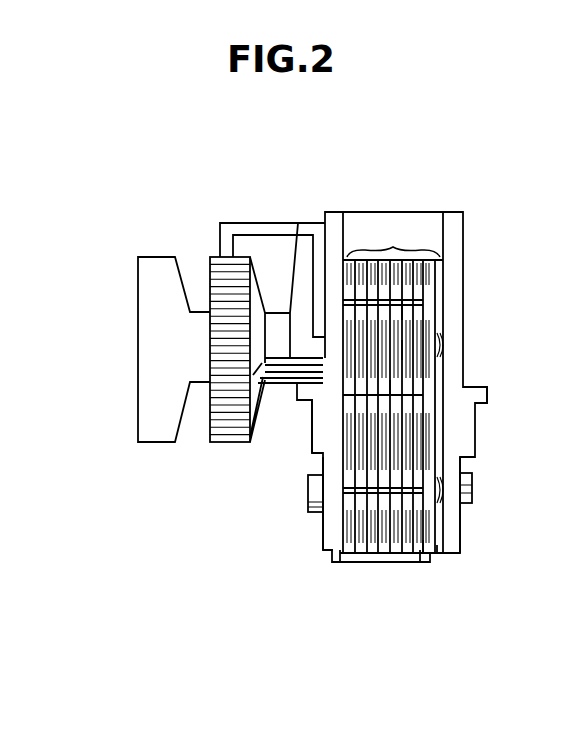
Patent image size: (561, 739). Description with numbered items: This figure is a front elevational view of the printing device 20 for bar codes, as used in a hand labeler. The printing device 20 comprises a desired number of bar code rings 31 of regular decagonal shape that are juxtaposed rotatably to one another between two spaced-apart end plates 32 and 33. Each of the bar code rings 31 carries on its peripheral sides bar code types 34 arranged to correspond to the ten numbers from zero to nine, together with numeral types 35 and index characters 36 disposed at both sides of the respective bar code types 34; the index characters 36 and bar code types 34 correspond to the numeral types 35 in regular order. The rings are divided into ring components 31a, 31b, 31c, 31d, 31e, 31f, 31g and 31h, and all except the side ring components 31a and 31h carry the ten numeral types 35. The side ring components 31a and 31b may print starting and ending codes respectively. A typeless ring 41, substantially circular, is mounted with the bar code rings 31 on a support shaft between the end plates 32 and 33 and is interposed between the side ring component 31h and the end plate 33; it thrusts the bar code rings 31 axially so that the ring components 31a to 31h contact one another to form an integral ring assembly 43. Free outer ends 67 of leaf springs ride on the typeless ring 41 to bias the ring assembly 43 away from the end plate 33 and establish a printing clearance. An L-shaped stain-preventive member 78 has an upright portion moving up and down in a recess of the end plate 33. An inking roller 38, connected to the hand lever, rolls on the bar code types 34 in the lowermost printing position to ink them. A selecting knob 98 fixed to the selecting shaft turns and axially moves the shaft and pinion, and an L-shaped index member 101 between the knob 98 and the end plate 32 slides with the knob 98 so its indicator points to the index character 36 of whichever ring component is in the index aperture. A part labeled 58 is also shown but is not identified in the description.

The printing device 20 is at (442, 198).
The selecting knob 98 is at (236, 442).
The L-shaped index member 101 is at (303, 231).
The top plate 58 is at (420, 212).
The integral ring assembly 43 is at (393, 240).
The bar code rings 31 is at (392, 444).
The side ring component 31a is at (336, 559).
The ring component 31b is at (340, 563).
The ring component 31c is at (347, 563).
The ring component 31d is at (355, 563).
The ring component 31e is at (366, 563).
The ring component 31f is at (378, 563).
The ring component 31g is at (393, 563).
The side ring component 31h is at (407, 563).
The index characters 36 is at (410, 315).
The bar code types 34 is at (403, 353).
The numeral types 35 is at (397, 390).
The inking roller 38 is at (480, 396).
The free outer ends 67 is at (445, 487).
The end plate 32 is at (333, 525).
The end plate 33 is at (453, 534).
The stain-preventive member 78 is at (435, 551).
The typeless ring 41 is at (437, 558).